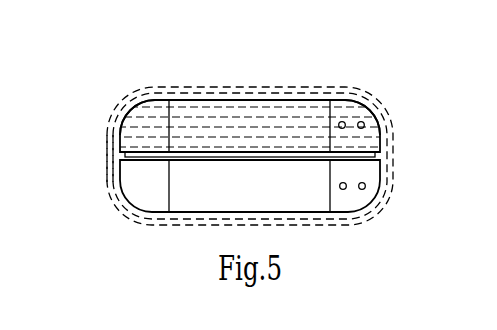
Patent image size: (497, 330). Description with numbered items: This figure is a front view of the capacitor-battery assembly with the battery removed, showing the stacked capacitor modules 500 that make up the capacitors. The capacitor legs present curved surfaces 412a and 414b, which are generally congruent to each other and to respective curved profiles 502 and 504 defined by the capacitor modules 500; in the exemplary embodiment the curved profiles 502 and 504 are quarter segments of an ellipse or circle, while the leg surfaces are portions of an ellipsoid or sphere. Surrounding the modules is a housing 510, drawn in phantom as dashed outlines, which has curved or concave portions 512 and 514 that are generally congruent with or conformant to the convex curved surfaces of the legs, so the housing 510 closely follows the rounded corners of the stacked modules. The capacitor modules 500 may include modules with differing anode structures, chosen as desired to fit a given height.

The capacitor modules 500 is at (245, 119).
The curved profile 502 is at (155, 99).
The curved profile 504 is at (364, 128).
The housing 510 is at (311, 86).
The curved portion 512 is at (108, 133).
The curved portion 514 is at (383, 121).
The curved surface 412a is at (128, 108).
The flat end surface 414b is at (357, 98).